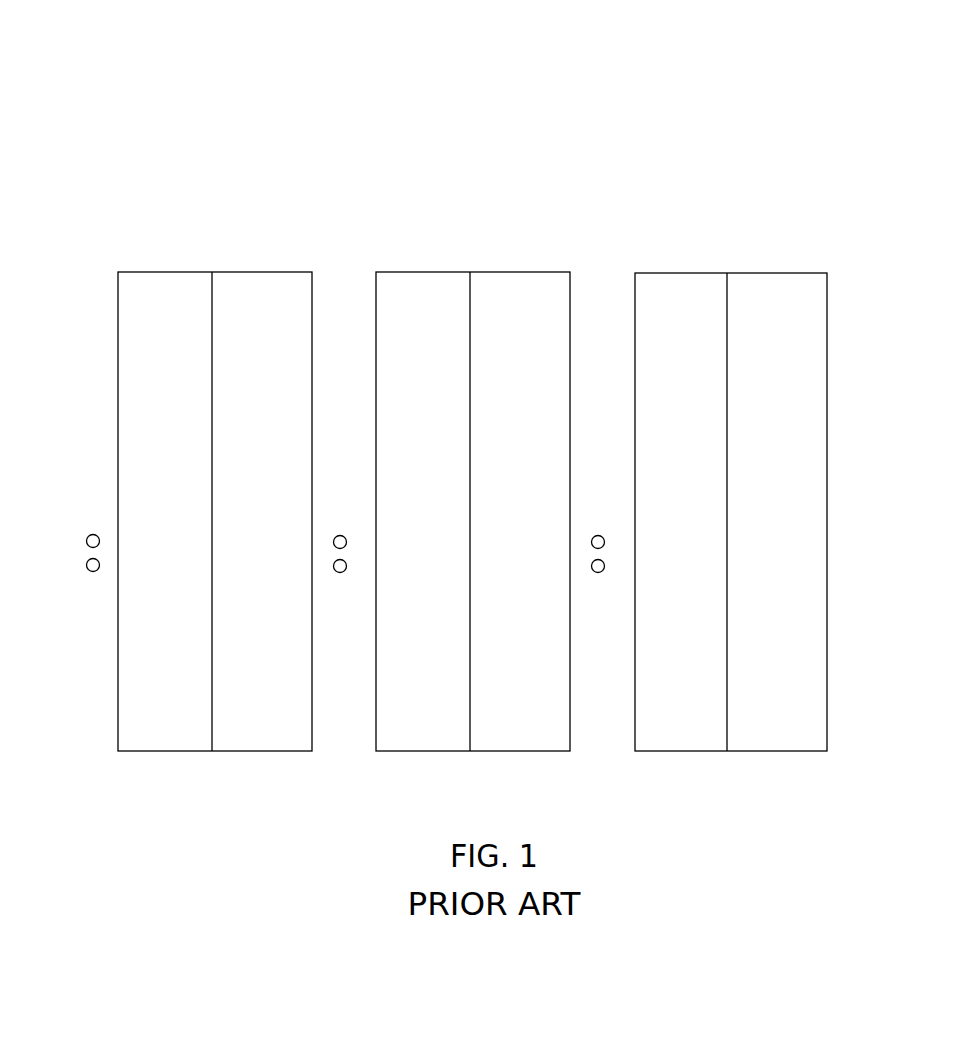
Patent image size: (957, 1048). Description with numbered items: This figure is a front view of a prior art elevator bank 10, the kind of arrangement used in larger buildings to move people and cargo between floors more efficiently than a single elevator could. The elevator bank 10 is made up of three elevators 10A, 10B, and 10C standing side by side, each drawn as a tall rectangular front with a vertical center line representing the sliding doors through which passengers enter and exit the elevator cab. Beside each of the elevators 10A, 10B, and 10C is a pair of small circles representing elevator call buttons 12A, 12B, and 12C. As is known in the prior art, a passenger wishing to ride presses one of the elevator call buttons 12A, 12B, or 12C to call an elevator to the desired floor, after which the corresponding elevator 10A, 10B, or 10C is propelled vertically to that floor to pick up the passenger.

The elevator bank 10 is at (472, 384).
The elevator 10A is at (184, 230).
The elevator 10B is at (435, 233).
The elevator 10C is at (692, 233).
The elevator call button 12A is at (81, 515).
The elevator call button 12B is at (329, 517).
The elevator call button 12C is at (586, 517).